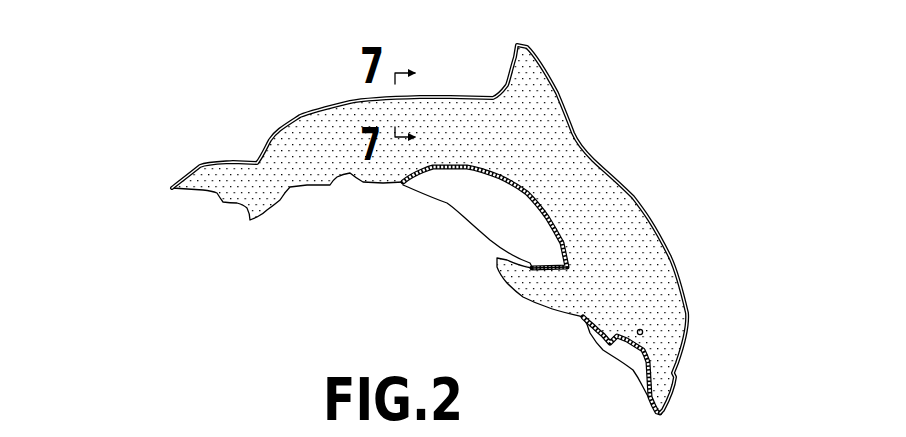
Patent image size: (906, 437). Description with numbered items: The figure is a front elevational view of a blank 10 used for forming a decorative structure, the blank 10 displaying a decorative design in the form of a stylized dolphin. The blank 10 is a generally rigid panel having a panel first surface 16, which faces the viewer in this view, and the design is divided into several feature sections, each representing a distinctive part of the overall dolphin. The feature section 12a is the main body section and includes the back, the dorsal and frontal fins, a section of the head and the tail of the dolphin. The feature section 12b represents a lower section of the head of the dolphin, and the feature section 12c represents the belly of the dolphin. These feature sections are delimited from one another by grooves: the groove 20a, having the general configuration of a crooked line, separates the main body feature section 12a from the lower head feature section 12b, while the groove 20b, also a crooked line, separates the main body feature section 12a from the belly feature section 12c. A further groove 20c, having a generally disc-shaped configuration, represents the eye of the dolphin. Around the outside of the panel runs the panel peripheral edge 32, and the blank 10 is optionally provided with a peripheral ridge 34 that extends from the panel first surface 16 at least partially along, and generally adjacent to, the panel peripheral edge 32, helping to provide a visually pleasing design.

The blank 10 is at (134, 131).
The feature section 12a is at (303, 157).
The feature section 12b is at (637, 368).
The feature section 12c is at (490, 203).
The panel first surface 16 is at (547, 142).
The groove 20a is at (655, 377).
The groove 20b is at (562, 243).
The groove 20c is at (643, 329).
The panel peripheral edge 32 is at (336, 178).
The peripheral ridge 34 is at (550, 80).